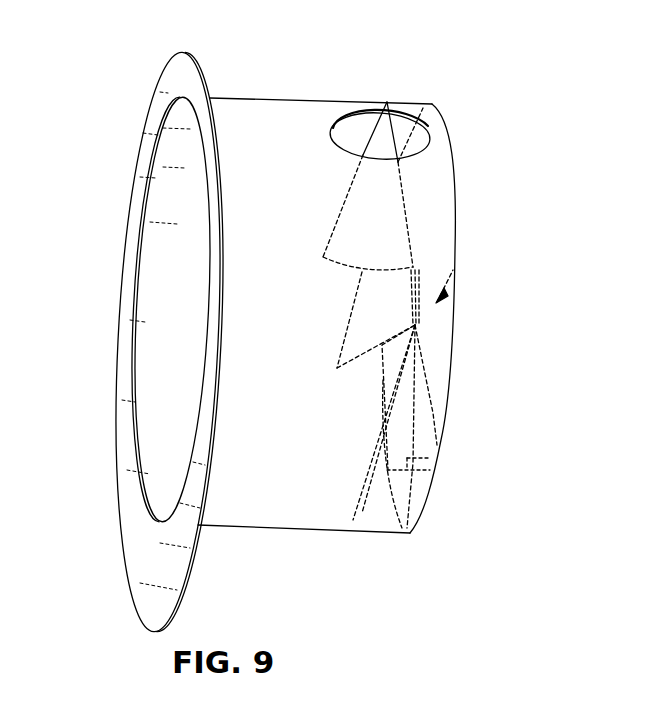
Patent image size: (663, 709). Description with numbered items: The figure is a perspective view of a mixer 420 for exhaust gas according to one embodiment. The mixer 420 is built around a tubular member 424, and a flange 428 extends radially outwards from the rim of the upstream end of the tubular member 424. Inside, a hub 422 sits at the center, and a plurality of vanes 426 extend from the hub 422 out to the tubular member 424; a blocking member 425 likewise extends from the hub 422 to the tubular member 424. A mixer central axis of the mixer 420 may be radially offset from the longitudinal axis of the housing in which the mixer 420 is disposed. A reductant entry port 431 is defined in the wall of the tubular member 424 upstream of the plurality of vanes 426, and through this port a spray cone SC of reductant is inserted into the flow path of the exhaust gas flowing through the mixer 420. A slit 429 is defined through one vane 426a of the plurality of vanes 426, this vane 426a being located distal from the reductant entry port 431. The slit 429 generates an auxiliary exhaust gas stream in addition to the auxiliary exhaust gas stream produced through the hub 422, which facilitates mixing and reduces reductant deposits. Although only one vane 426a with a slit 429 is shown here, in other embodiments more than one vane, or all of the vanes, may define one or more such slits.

The mixer 420 is at (490, 149).
The flange 428 is at (142, 603).
The tubular member 424 is at (258, 515).
The blocking member 425 is at (456, 206).
The reductant entry port 431 is at (345, 130).
The light cone SC is at (402, 108).
The hub 422 is at (420, 322).
The plurality of vanes 426 is at (442, 298).
The vane 426a is at (434, 413).
The slit 429 is at (432, 455).